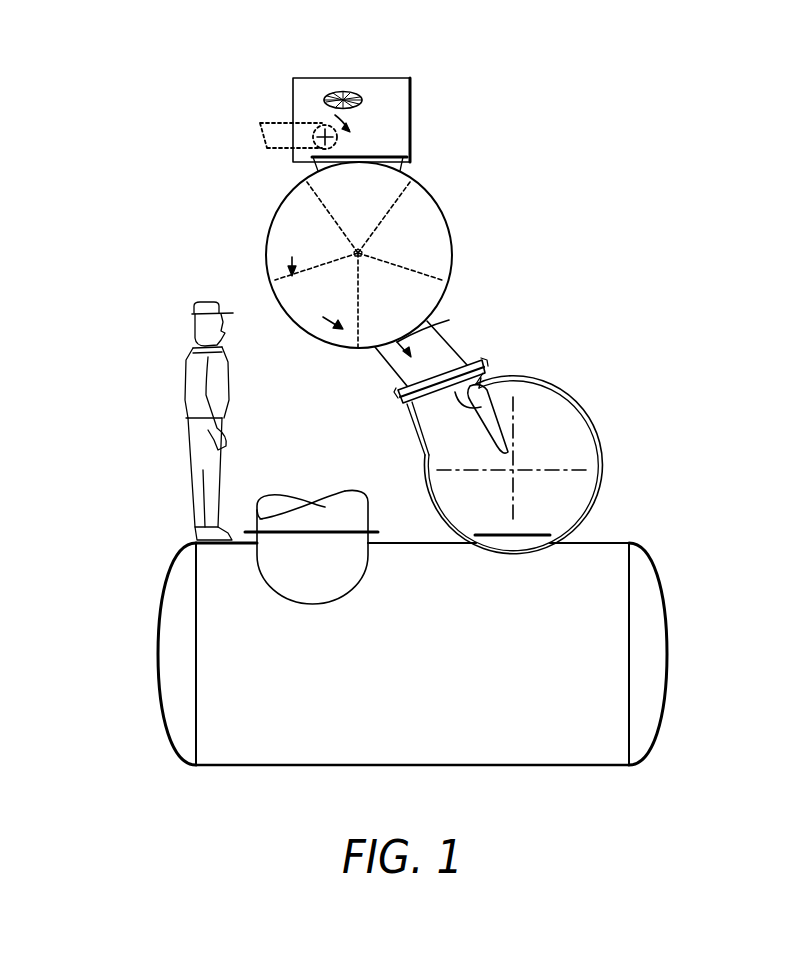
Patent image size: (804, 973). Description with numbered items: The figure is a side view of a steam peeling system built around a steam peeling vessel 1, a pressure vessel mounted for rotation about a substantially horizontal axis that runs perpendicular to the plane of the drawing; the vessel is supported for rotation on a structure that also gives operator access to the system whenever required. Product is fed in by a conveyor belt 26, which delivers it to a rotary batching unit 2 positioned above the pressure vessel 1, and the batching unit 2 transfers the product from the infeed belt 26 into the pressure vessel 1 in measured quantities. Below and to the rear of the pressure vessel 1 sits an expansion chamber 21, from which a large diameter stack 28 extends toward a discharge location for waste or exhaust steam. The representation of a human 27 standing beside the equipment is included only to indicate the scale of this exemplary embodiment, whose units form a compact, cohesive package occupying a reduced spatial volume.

The steam peeling vessel 1 is at (577, 407).
The rotary batching unit 2 is at (447, 217).
The expansion chamber 21 is at (643, 645).
The conveyor belt 26 is at (277, 122).
The human figure 27 is at (200, 464).
The stack 28 is at (337, 507).